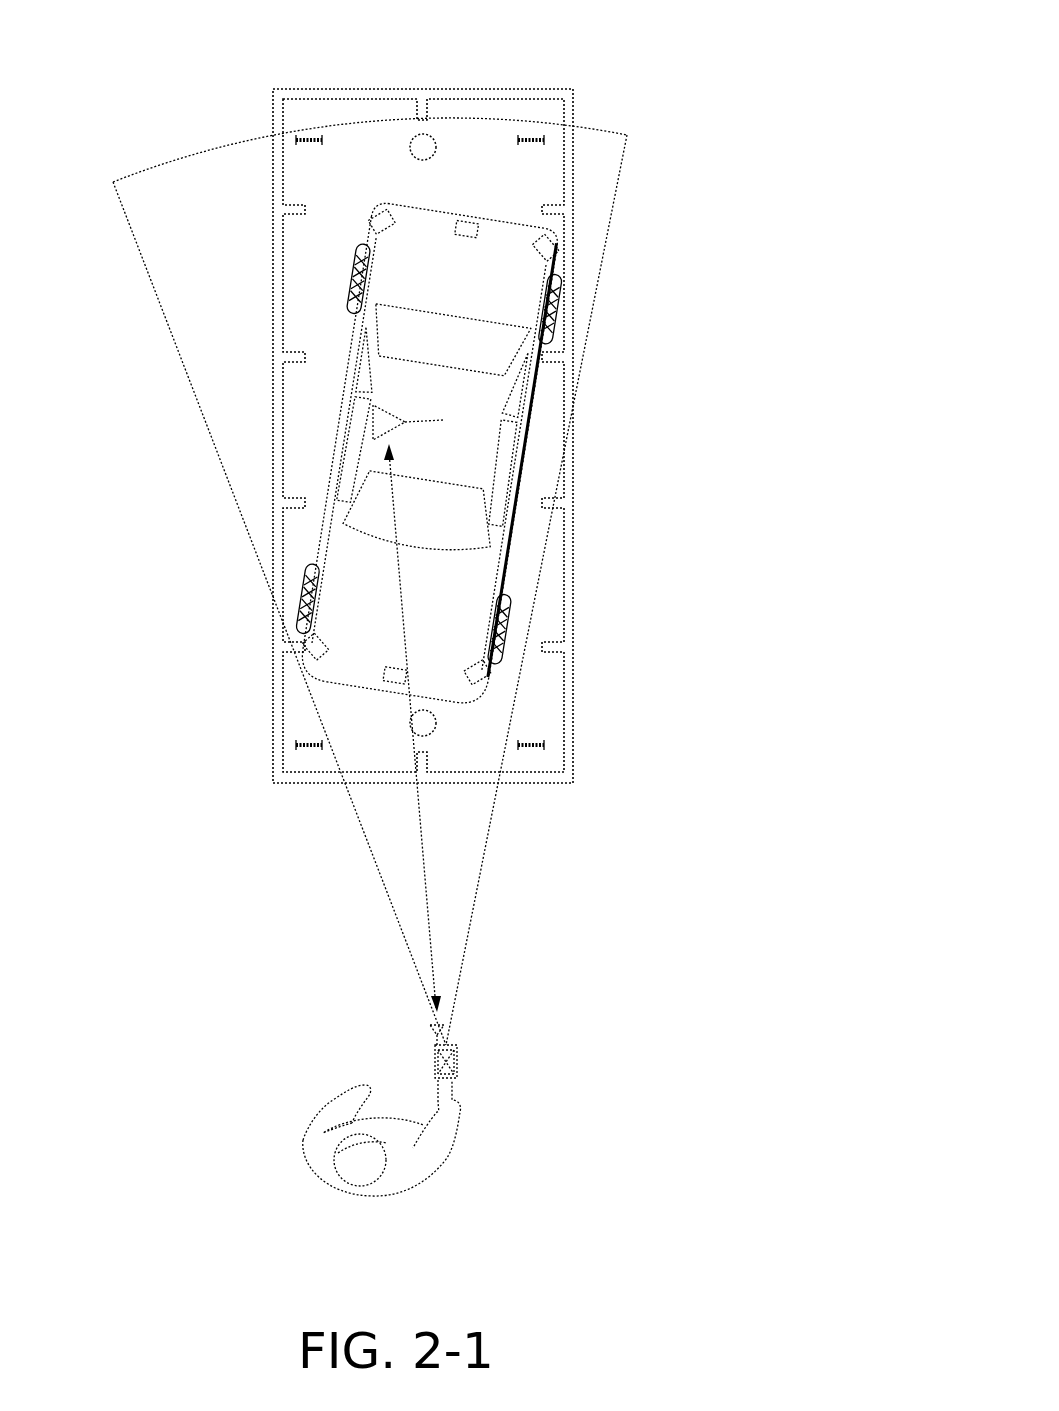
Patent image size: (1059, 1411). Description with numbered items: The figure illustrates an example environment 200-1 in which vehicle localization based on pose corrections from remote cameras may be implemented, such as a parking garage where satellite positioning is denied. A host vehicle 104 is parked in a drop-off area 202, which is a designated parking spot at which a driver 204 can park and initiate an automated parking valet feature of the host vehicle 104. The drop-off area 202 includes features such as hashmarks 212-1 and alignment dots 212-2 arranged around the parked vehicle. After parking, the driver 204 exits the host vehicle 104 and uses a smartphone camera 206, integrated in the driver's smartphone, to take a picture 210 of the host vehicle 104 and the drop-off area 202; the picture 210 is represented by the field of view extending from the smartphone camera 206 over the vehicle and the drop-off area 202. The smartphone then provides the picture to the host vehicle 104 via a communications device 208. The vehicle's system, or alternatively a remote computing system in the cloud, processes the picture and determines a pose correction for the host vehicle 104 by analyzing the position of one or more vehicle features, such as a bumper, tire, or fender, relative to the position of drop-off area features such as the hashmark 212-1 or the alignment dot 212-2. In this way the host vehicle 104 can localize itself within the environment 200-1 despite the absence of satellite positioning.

The environment 200-1 is at (708, 31).
The drop-off area 202 is at (573, 685).
The driver 204 is at (450, 1152).
The smartphone camera 206 is at (457, 1045).
The communications device 208 is at (415, 422).
The picture 210 is at (620, 175).
The hashmarks 212-1 is at (551, 644).
The alignment dots 212-2 is at (431, 137).
The host vehicle 104 is at (432, 207).